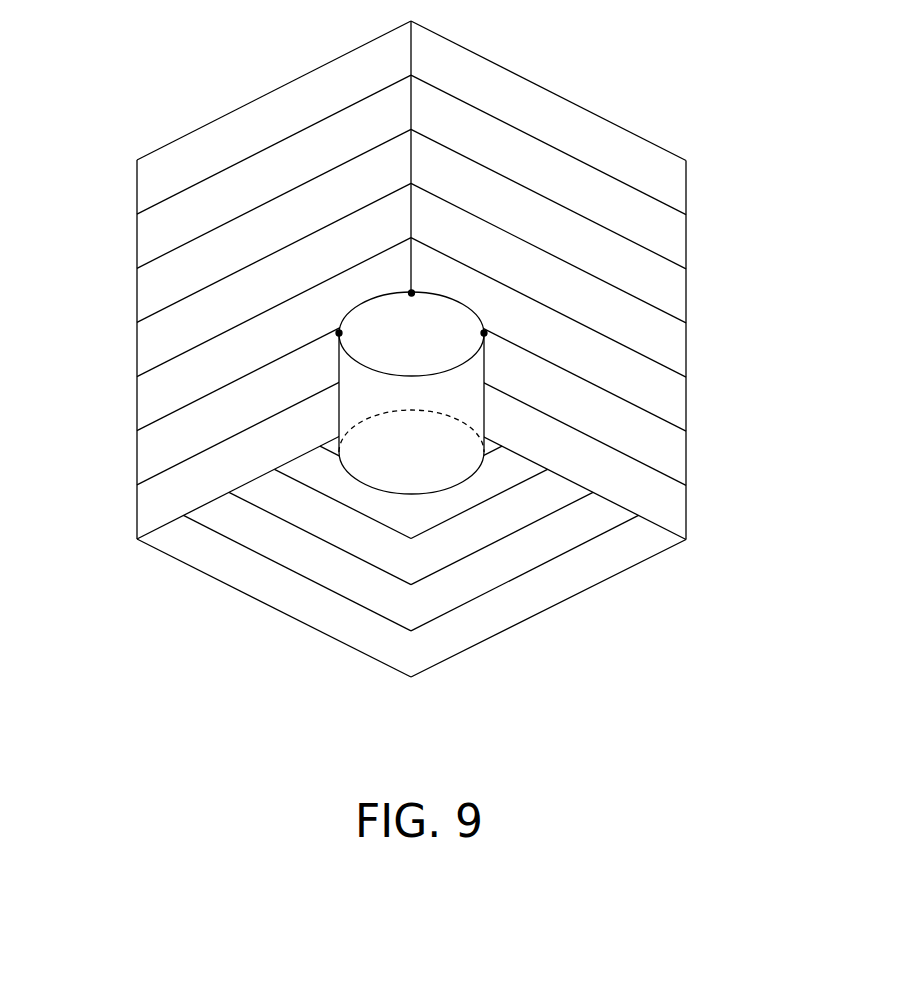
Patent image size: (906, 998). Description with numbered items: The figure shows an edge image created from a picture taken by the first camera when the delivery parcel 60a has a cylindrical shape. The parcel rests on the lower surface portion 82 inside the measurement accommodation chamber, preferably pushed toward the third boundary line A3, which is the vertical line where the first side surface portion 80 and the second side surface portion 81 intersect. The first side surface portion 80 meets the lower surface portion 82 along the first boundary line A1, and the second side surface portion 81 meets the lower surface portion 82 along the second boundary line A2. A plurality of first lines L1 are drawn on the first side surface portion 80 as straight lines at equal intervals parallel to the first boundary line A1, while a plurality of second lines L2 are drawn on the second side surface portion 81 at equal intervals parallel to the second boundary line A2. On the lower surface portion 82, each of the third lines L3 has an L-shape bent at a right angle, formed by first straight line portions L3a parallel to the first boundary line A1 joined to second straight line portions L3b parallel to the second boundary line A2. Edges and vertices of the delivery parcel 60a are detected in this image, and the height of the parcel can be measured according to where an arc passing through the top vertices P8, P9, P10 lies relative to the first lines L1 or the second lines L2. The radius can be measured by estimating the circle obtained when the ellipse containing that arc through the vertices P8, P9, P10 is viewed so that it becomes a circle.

The first side surface portion 80 is at (589, 280).
The second side surface portion 81 is at (232, 280).
The lower surface portion 82 is at (411, 551).
The delivery parcel 60a is at (358, 379).
The first boundary line A1 is at (571, 480).
The second boundary line A2 is at (253, 480).
The third boundary line A3 is at (413, 165).
The first lines L1 is at (600, 391).
The second lines L2 is at (301, 294).
The third lines L3 is at (404, 562).
The first straight line portions L3a is at (322, 543).
The second straight line portions L3b is at (533, 526).
The top vertex P8 is at (502, 322).
The top vertex P9 is at (448, 297).
The top vertex P10 is at (313, 322).